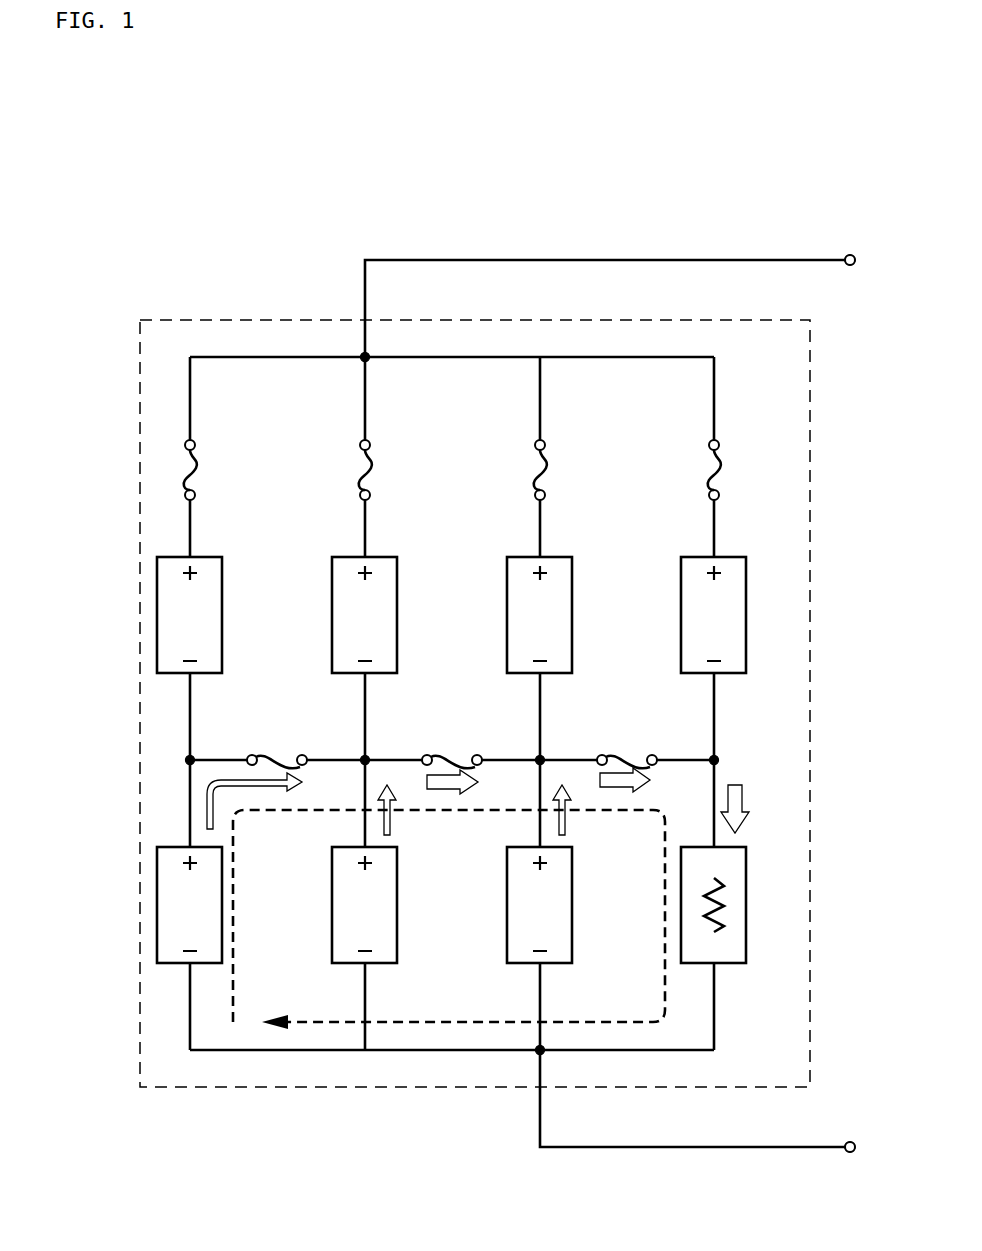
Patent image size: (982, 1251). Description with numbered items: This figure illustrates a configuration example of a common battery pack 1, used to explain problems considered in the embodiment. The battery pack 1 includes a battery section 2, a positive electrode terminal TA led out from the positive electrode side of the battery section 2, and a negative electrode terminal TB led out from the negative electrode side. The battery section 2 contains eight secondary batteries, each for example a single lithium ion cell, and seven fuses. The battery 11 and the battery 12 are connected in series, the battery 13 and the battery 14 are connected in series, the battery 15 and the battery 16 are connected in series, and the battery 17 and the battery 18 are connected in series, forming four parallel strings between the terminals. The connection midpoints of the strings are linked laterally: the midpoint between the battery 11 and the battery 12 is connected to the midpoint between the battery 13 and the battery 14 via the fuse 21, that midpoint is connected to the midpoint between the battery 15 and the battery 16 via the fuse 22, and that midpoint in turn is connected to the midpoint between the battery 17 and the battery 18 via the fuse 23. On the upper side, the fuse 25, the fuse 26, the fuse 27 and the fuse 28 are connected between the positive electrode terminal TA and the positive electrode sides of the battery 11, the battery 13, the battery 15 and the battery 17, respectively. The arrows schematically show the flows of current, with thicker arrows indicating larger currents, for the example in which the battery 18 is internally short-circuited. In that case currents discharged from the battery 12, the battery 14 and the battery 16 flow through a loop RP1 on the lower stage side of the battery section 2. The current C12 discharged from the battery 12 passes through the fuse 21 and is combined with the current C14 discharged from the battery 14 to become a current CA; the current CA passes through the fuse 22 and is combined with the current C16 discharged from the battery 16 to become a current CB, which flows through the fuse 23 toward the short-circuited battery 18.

The battery pack 1 is at (522, 132).
The battery section 2 is at (138, 728).
The battery 11 is at (222, 617).
The battery 12 is at (222, 907).
The battery 13 is at (397, 617).
The battery 14 is at (397, 907).
The battery 15 is at (572, 617).
The battery 16 is at (572, 907).
The battery 17 is at (746, 617).
The battery 18 is at (746, 907).
The fuse 21 is at (262, 755).
The fuse 22 is at (437, 755).
The fuse 23 is at (612, 755).
The fuse 25 is at (196, 462).
The fuse 26 is at (371, 462).
The fuse 27 is at (546, 462).
The fuse 28 is at (720, 462).
The current C12 is at (288, 788).
The current C14 is at (391, 826).
The current C16 is at (566, 826).
The current CA is at (470, 786).
The current CB is at (642, 790).
The loop RP1 is at (445, 1019).
The positive electrode terminal TA is at (850, 254).
The negative electrode terminal TB is at (850, 1141).